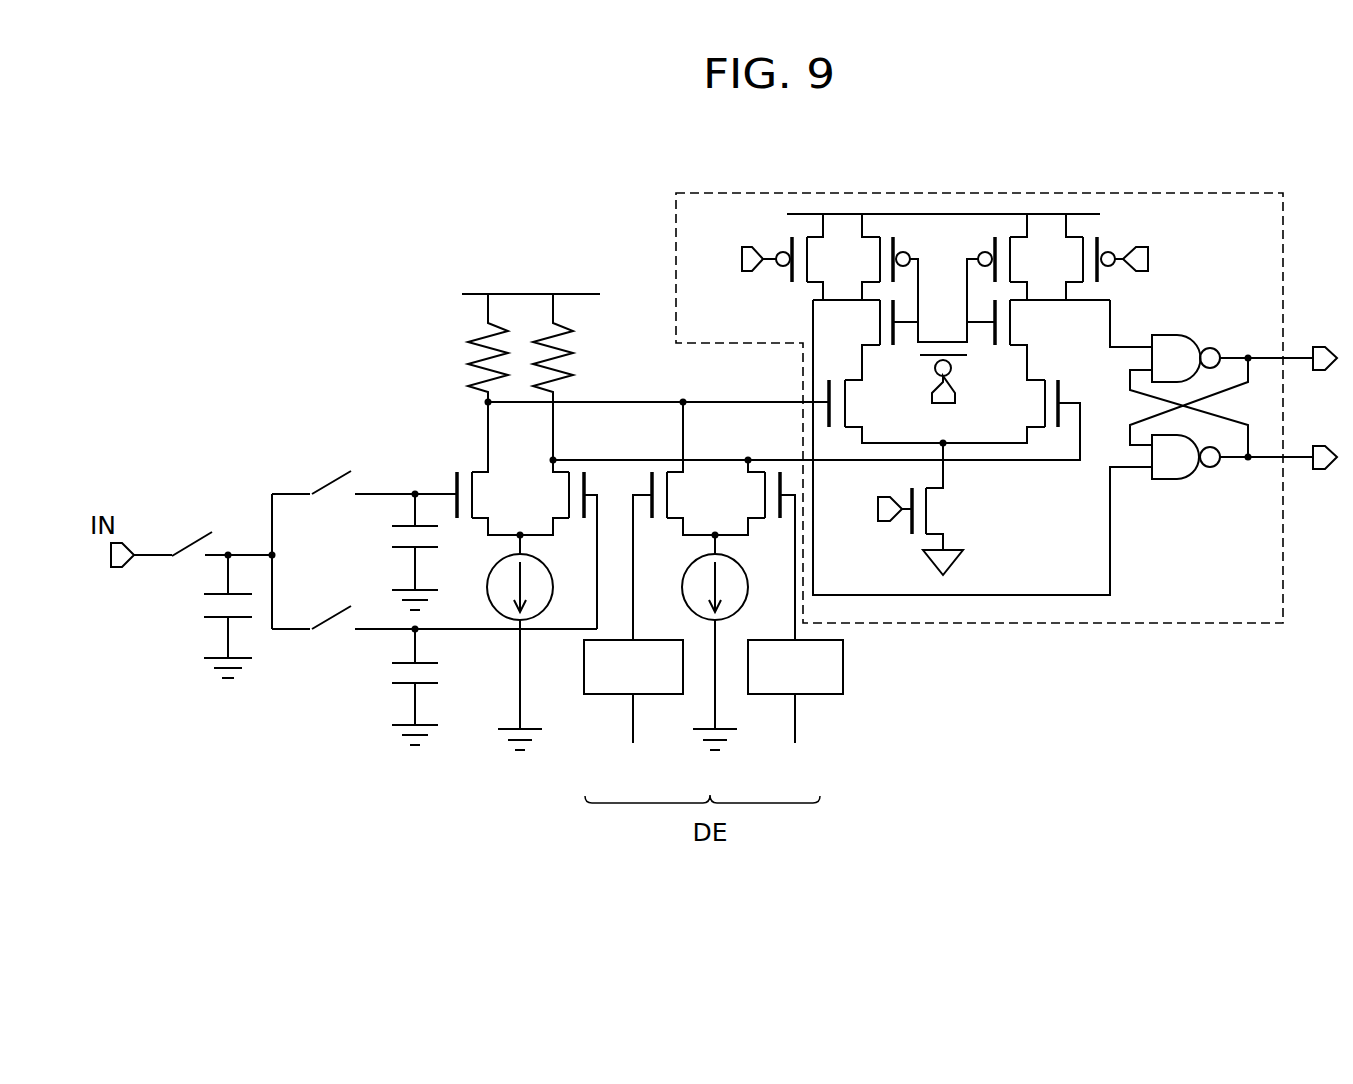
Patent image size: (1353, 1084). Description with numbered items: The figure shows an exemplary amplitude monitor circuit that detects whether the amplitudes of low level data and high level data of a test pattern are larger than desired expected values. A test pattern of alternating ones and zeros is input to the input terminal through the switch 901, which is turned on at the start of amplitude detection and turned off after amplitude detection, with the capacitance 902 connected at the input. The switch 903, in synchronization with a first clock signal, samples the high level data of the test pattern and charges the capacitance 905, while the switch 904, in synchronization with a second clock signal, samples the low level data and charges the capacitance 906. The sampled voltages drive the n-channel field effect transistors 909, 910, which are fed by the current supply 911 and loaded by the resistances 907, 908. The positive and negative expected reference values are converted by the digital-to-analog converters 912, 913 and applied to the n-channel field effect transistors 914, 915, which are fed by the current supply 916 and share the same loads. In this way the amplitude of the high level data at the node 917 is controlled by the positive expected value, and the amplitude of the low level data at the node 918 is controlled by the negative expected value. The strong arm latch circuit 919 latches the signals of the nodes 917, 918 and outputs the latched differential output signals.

The switch 901 is at (192, 548).
The capacitance 902 is at (201, 611).
The switch 903 is at (328, 478).
The switch 904 is at (332, 613).
The capacitance 905 is at (391, 538).
The capacitance 906 is at (386, 668).
The resistance 907 is at (470, 352).
The resistance 908 is at (572, 357).
The n-channel field effect transistor 909 is at (462, 467).
The n-channel field effect transistor 910 is at (573, 520).
The current supply 911 is at (487, 587).
The digital-to-analog converter 912 is at (584, 673).
The digital-to-analog converter 913 is at (843, 667).
The n-channel field effect transistor 914 is at (660, 520).
The n-channel field effect transistor 915 is at (770, 520).
The current supply 916 is at (746, 590).
The node 917 is at (687, 400).
The node 918 is at (748, 458).
The strong arm latch circuit 919 is at (1181, 625).